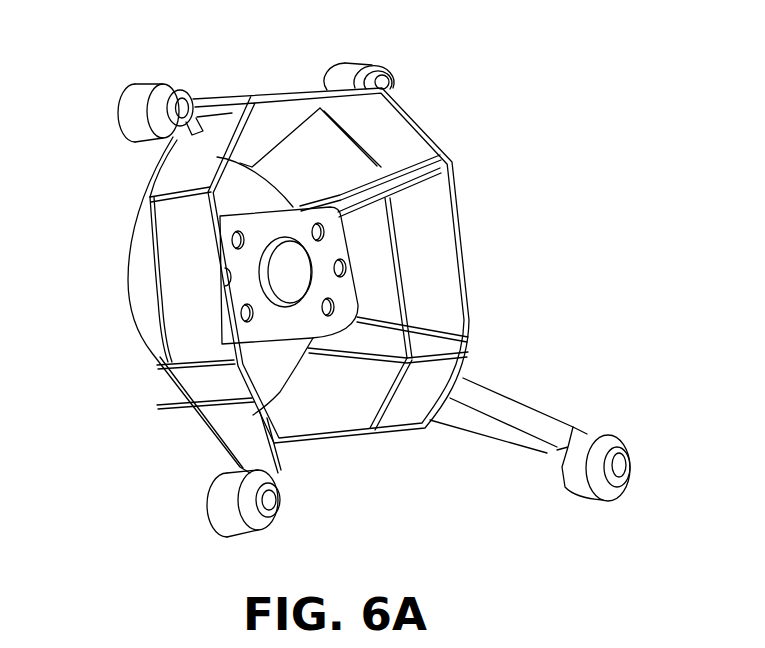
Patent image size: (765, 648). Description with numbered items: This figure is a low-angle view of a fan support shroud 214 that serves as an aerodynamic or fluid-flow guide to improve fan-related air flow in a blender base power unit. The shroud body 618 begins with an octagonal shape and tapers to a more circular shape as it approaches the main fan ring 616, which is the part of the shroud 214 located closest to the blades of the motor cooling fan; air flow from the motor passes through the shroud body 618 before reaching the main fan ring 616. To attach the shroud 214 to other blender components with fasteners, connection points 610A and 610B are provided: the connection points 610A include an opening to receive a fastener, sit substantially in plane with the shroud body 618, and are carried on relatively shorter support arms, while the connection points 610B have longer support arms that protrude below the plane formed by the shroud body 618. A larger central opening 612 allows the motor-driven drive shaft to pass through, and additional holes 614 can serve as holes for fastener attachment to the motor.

The fan support shroud 214 is at (126, 44).
The connection points 610A is at (360, 66).
The connection points 610B is at (598, 470).
The central opening 612 is at (287, 268).
The additional holes 614 is at (322, 306).
The main fan ring 616 is at (313, 338).
The shroud body 618 is at (397, 138).